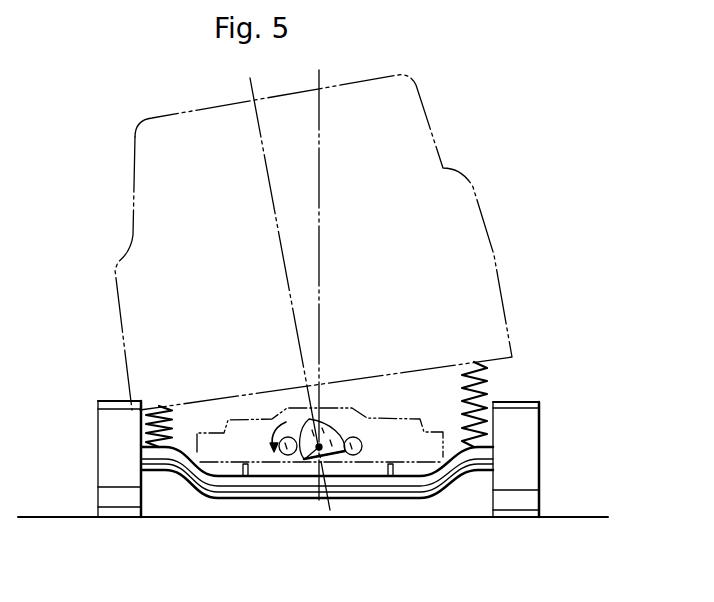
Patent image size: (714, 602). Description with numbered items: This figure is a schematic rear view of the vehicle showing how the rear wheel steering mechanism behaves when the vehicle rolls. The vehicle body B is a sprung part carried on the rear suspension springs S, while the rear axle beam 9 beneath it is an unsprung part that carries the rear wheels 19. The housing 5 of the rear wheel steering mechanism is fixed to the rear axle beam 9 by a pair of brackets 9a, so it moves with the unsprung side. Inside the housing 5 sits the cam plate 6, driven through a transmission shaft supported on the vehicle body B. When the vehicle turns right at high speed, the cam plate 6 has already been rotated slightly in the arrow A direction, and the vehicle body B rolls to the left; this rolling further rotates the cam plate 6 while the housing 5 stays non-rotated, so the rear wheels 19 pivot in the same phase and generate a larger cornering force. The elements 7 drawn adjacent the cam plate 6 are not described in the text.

The vehicle body B is at (437, 141).
The rear suspension springs S is at (172, 416).
The rear wheels 19 is at (110, 441).
The rear axle beam 9 is at (373, 488).
The brackets 9a is at (233, 478).
The housing 5 is at (398, 417).
The cam plate 6 is at (307, 452).
The roller 7 is at (287, 453).